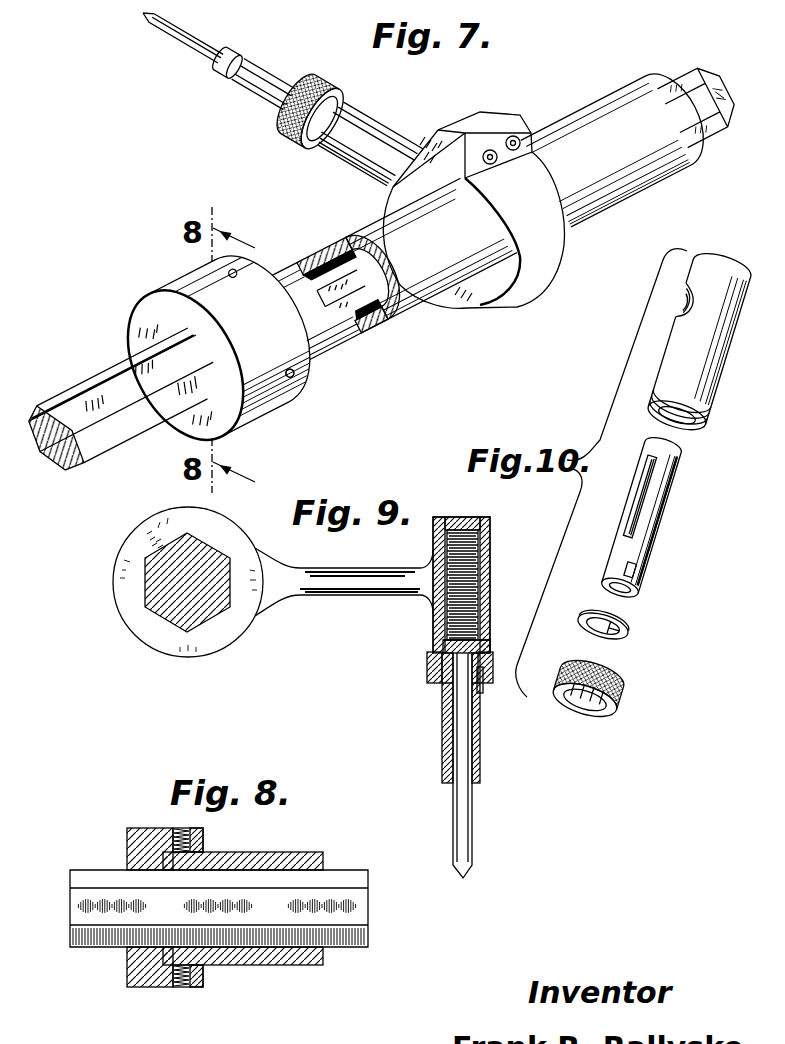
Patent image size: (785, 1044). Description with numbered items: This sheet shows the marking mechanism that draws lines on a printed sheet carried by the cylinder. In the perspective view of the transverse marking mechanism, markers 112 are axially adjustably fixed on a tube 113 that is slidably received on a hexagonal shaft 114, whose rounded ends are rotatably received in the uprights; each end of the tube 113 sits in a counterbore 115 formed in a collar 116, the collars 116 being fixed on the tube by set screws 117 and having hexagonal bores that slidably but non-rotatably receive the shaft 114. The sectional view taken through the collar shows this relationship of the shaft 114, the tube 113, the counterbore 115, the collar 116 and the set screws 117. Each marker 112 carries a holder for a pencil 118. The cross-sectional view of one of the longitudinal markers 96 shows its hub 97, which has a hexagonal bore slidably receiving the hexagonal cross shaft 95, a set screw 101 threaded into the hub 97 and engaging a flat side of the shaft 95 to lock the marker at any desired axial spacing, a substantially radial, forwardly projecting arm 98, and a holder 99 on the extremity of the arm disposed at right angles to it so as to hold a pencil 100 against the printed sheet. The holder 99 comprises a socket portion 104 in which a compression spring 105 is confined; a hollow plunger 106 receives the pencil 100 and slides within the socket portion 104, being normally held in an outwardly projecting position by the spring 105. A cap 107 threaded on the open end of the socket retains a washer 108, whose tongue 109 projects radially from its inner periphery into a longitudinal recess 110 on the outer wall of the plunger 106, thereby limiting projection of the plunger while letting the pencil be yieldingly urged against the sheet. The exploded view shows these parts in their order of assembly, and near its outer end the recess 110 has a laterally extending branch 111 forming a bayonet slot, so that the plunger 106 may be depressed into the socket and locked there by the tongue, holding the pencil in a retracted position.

In FIG. 9, the cross shaft 95 is at (208, 615).
In FIG. 9, the marker 96 is at (420, 693).
In FIG. 9, the hub 97 is at (118, 619).
In FIG. 9, the arm 98 is at (352, 569).
In FIG. 9, the holder 99 is at (420, 658).
In FIG. 9, the pencil 100 is at (472, 823).
In FIG. 9, the set screw 101 is at (150, 543).
In FIG. 9, the socket portion 104 is at (486, 563).
In FIG. 10, the socket portion 104 is at (705, 365).
In FIG. 9, the compression spring 105 is at (487, 517).
In FIG. 9, the hollow plunger 106 is at (440, 716).
In FIG. 10, the hollow plunger 106 is at (680, 470).
In FIG. 9, the cap 107 is at (425, 679).
In FIG. 10, the cap 107 is at (627, 700).
In FIG. 9, the washer 108 is at (480, 693).
In FIG. 10, the washer 108 is at (628, 638).
In FIG. 10, the tongue 109 is at (628, 626).
In FIG. 10, the longitudinal recess 110 is at (640, 512).
In FIG. 10, the laterally extending branch 111 is at (629, 567).
In FIG. 7, the marker 112 is at (490, 100).
In FIG. 7, the tube 113 is at (593, 132).
In FIG. 7, the hexagonal shaft 114 is at (80, 383).
In FIG. 8, the counterbore 115 is at (195, 958).
In FIG. 7, the collar 116 is at (265, 312).
In FIG. 8, the collar 116 is at (158, 987).
In FIG. 7, the set screw 117 is at (302, 382).
In FIG. 8, the set screw 117 is at (183, 828).
In FIG. 7, the pencil 118 is at (181, 52).